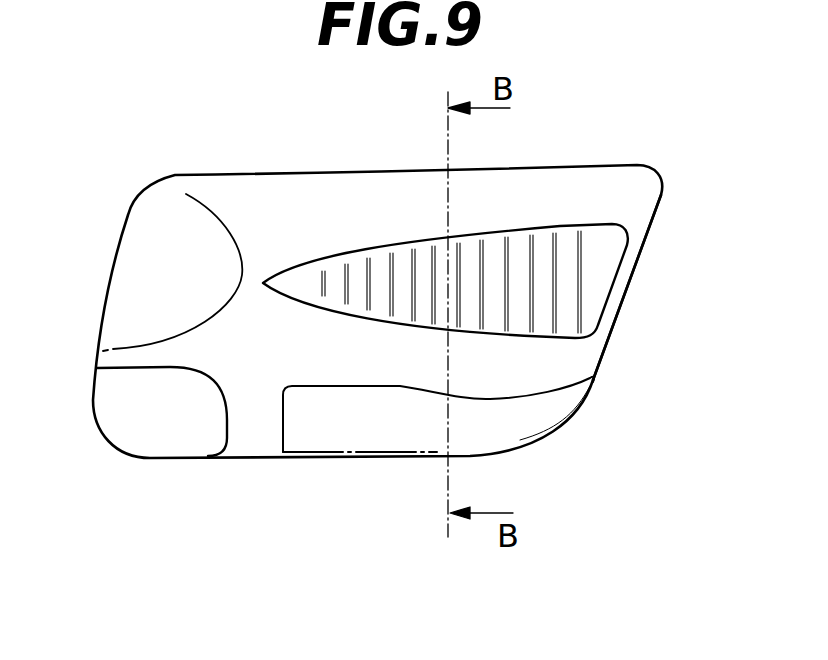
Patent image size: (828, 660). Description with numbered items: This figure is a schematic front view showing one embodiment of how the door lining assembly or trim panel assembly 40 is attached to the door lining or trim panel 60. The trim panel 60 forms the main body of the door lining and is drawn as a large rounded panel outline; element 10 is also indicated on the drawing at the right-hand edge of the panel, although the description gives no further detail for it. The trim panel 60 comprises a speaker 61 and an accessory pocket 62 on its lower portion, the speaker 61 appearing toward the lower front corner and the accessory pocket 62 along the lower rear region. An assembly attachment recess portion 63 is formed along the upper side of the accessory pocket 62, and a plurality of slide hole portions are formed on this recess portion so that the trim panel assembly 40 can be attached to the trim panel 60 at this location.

The door trim member 10 is at (603, 273).
The trim panel assembly 40 is at (567, 205).
The trim panel 60 is at (290, 192).
The speaker 61 is at (152, 437).
The accessory pocket 62 is at (493, 397).
The assembly attachment recess portion 63 is at (370, 318).